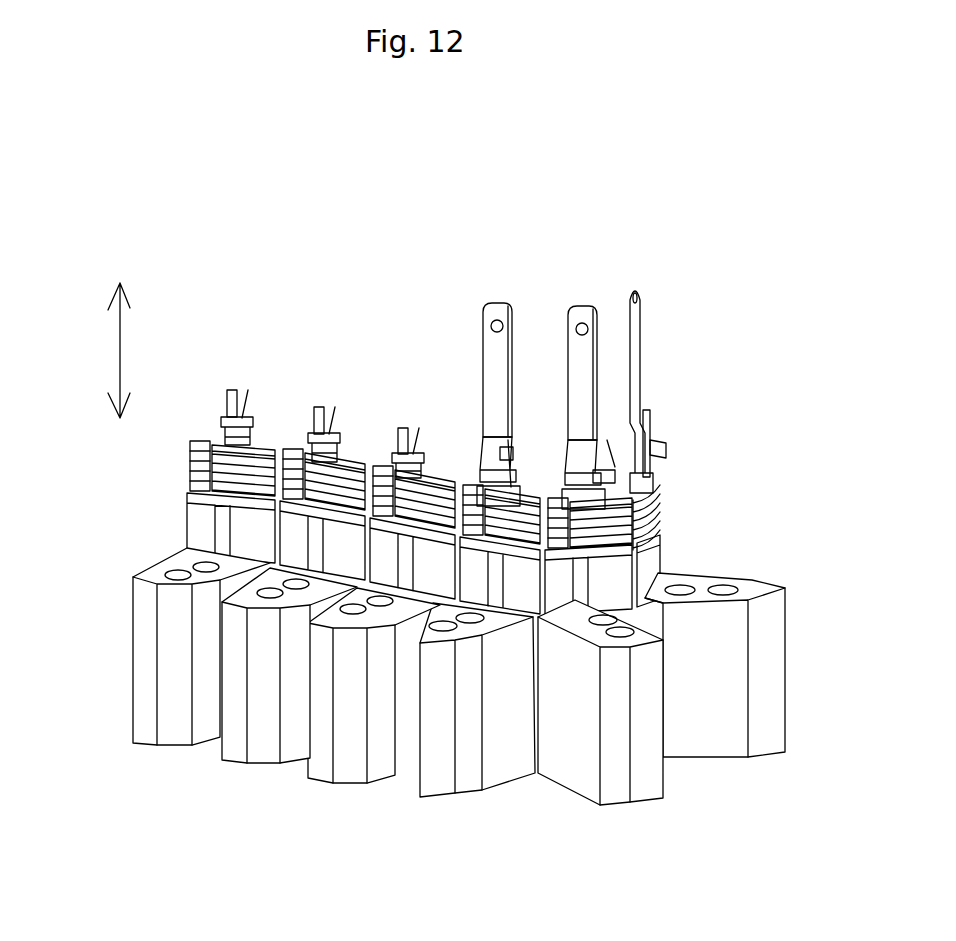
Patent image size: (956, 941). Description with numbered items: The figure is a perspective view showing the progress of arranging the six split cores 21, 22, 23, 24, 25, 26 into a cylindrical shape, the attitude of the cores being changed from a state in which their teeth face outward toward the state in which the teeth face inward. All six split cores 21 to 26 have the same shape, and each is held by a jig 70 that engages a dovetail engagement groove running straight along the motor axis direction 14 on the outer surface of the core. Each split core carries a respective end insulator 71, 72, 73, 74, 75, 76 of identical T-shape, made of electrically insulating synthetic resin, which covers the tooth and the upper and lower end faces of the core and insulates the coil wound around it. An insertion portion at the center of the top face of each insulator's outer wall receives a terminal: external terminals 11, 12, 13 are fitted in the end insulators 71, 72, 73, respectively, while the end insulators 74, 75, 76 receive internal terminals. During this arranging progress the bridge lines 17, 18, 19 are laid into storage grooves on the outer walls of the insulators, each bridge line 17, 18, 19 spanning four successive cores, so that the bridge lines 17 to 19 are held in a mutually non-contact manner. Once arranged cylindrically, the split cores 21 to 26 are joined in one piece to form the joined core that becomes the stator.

The external terminal 11 is at (641, 358).
The external terminal 12 is at (567, 337).
The external terminal 13 is at (482, 362).
The motor axis direction 14 is at (118, 352).
The bridge line 17 is at (627, 505).
The bridge line 18 is at (390, 474).
The bridge line 19 is at (283, 460).
The split core 21 is at (680, 455).
The split core 22 is at (557, 461).
The split core 23 is at (464, 431).
The split core 24 is at (402, 400).
The split core 25 is at (305, 390).
The split core 26 is at (206, 414).
The jig 70 is at (143, 656).
The end insulator 71 is at (655, 501).
The end insulator 72 is at (553, 507).
The end insulator 73 is at (466, 491).
The end insulator 74 is at (380, 473).
The end insulator 75 is at (301, 462).
The end insulator 76 is at (193, 456).